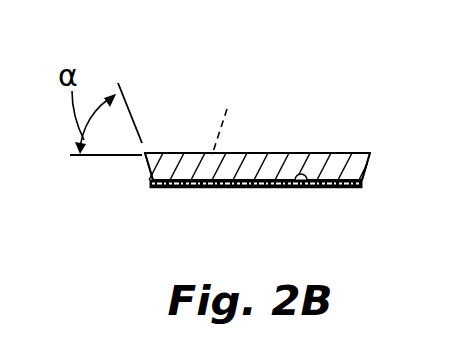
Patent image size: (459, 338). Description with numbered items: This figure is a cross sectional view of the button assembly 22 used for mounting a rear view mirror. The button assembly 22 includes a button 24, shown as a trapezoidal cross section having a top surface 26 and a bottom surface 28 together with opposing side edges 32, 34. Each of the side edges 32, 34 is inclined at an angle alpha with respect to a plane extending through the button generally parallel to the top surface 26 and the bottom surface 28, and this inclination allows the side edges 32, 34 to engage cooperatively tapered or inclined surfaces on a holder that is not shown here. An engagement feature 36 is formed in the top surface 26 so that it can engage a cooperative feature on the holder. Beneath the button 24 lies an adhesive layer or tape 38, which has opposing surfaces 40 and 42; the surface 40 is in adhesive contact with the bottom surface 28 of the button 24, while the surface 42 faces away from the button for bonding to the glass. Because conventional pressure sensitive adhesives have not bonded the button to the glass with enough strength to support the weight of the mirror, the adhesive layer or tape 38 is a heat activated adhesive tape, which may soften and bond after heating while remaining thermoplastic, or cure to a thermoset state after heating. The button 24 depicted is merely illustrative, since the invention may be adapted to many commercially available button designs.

The button assembly 22 is at (281, 72).
The button 24 is at (316, 147).
The top surface 26 is at (180, 153).
The bottom surface 28 is at (248, 186).
The side edge 32 is at (147, 168).
The side edge 34 is at (363, 181).
The engagement feature 36 is at (227, 121).
The adhesive layer or tape 38 is at (219, 198).
The surface 40 is at (293, 187).
The surface 42 is at (328, 188).